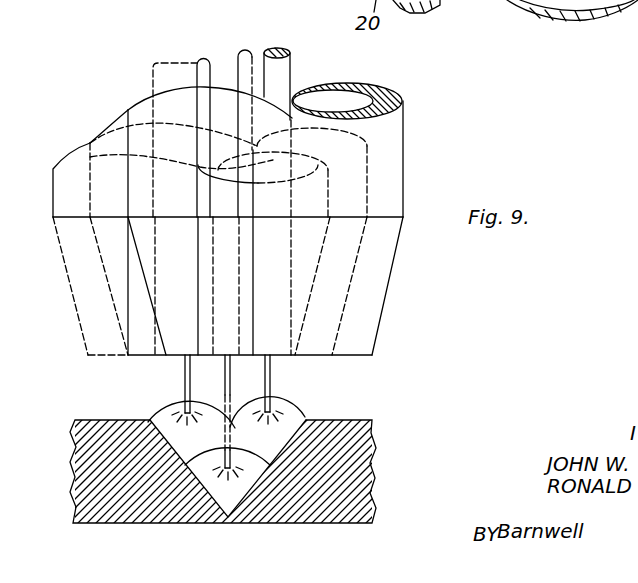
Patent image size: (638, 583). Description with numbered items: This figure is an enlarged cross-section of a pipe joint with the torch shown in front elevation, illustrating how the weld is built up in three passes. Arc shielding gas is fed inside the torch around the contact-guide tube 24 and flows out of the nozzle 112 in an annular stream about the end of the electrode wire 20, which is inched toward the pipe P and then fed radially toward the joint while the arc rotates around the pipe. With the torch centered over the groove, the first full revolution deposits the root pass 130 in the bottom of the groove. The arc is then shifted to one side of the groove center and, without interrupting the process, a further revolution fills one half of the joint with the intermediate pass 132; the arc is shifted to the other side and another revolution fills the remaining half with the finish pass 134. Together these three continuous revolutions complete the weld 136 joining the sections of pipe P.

The contact-guide tube 24 is at (217, 67).
The nozzle 112 is at (117, 265).
The electrode wire 20 is at (184, 378).
The weld 136 is at (237, 414).
The intermediate pass 132 is at (168, 422).
The finish pass 134 is at (292, 413).
The root pass 130 is at (228, 523).
The pipe P is at (330, 512).